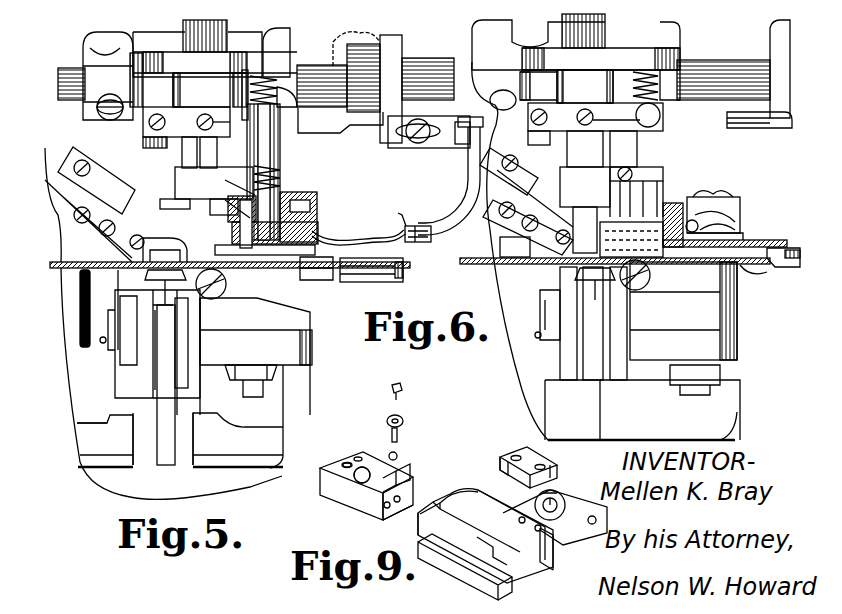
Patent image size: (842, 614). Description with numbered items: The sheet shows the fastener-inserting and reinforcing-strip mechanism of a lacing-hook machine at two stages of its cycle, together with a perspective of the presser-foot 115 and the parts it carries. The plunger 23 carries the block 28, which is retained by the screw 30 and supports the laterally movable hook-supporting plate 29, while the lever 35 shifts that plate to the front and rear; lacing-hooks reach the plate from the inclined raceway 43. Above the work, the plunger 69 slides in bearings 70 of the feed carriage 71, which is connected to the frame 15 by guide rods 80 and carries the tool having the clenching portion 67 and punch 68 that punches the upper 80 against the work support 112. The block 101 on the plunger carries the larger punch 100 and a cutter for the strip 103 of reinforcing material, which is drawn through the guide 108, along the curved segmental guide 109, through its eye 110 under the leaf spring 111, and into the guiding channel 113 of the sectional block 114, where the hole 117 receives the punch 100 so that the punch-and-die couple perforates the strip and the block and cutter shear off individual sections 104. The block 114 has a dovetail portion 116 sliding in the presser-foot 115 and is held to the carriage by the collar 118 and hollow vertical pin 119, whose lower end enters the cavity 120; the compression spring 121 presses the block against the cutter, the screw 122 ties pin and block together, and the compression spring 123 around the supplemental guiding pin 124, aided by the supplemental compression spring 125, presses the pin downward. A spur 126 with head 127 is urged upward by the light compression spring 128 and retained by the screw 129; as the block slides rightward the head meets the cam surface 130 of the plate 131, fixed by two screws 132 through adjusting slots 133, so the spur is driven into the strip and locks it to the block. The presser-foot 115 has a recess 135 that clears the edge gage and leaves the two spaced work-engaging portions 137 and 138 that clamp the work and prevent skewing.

In FIG. 5, the frame 15 is at (82, 410).
In FIG. 6, the frame 15 is at (738, 392).
In FIG. 5, the plunger 23 is at (140, 455).
In FIG. 5, the block 28 is at (140, 340).
In FIG. 6, the hook-supporting plate 29 is at (600, 285).
In FIG. 5, the screw 30 is at (61, 270).
In FIG. 6, the screw 30 is at (476, 268).
In FIG. 5, the lever 35 is at (158, 430).
In FIG. 5, the inclined raceway 43 is at (45, 175).
In FIG. 6, the clenching portion 67 is at (611, 210).
In FIG. 5, the punch 68 is at (241, 385).
In FIG. 5, the plunger 69 is at (184, 38).
In FIG. 6, the plunger 69 is at (564, 30).
In FIG. 6, the bearings 70 is at (585, 86).
In FIG. 5, the feed carriage 71 is at (280, 36).
In FIG. 6, the feed carriage 71 is at (576, 60).
In FIG. 5, the upper 80 is at (74, 73).
In FIG. 6, the upper 80 is at (735, 68).
In FIG. 6, the punch 100 is at (655, 128).
In FIG. 5, the block 101 is at (206, 191).
In FIG. 5, the strip 103 is at (383, 236).
In FIG. 6, the strip 103 is at (762, 240).
In FIG. 5, the individual sections 104 is at (228, 302).
In FIG. 5, the guide 108 is at (465, 138).
In FIG. 5, the curved segmental guide 109 is at (467, 175).
In FIG. 5, the eye 110 is at (401, 272).
In FIG. 5, the leaf spring 111 is at (412, 226).
In FIG. 5, the work support 112 is at (232, 310).
In FIG. 6, the work support 112 is at (680, 272).
In FIG. 9, the guiding channel 113 is at (372, 518).
In FIG. 6, the sectional block 114 is at (633, 234).
In FIG. 9, the sectional block 114 is at (345, 490).
In FIG. 5, the presser-foot 115 is at (312, 266).
In FIG. 6, the presser-foot 115 is at (748, 270).
In FIG. 9, the presser-foot 115 is at (460, 578).
In FIG. 9, the dovetail portion 116 is at (402, 487).
In FIG. 9, the hole 117 is at (346, 462).
In FIG. 5, the collar 118 is at (183, 113).
In FIG. 6, the collar 118 is at (660, 118).
In FIG. 5, the hollow vertical pin 119 is at (281, 150).
In FIG. 9, the cavity 120 is at (363, 466).
In FIG. 5, the compression spring 121 is at (268, 248).
In FIG. 5, the screw 122 is at (318, 208).
In FIG. 5, the compression spring 123 is at (276, 84).
In FIG. 5, the supplemental guiding pin 124 is at (258, 148).
In FIG. 5, the supplemental compression spring 125 is at (282, 180).
In FIG. 9, the spur 126 is at (398, 433).
In FIG. 6, the head 127 is at (672, 203).
In FIG. 9, the head 127 is at (402, 418).
In FIG. 9, the light compression spring 128 is at (398, 456).
In FIG. 6, the screw 129 is at (700, 192).
In FIG. 9, the screw 129 is at (402, 388).
In FIG. 9, the cam surface 130 is at (503, 460).
In FIG. 6, the plate 131 is at (740, 203).
In FIG. 9, the plate 131 is at (556, 536).
In FIG. 6, the screws 132 is at (733, 190).
In FIG. 9, the screws 132 is at (558, 472).
In FIG. 9, the slots 133 is at (538, 463).
In FIG. 9, the recess 135 is at (470, 532).
In FIG. 5, the work-engaging portion 137 is at (166, 245).
In FIG. 9, the work-engaging portion 137 is at (440, 503).
In FIG. 9, the work-engaging portion 138 is at (520, 575).